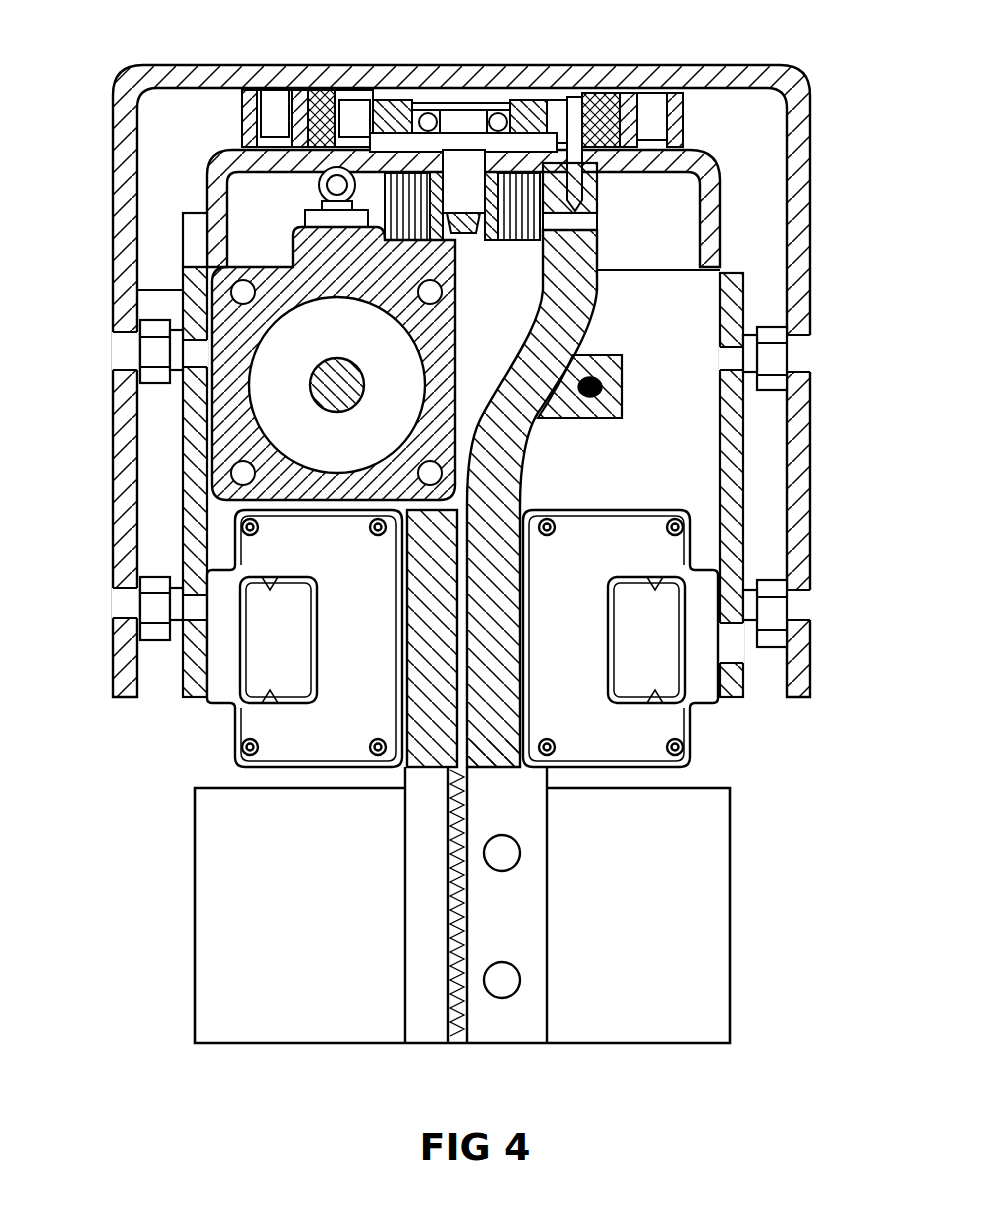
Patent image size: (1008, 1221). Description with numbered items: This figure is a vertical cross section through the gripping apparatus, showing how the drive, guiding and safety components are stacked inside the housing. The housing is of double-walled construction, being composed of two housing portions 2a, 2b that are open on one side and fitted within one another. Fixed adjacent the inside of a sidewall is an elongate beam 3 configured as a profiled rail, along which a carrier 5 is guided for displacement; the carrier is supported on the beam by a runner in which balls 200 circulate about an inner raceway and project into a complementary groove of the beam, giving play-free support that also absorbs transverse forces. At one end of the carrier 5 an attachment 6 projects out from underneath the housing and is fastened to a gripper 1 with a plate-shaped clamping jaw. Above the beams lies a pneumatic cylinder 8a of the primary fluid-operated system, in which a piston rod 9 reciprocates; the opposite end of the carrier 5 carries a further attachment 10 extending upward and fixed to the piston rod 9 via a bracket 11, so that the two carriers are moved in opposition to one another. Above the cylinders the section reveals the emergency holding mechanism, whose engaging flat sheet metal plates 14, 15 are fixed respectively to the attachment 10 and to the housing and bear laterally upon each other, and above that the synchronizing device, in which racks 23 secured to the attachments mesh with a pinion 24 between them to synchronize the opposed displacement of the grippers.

The gripper 1 is at (692, 835).
The housing portion 2a is at (805, 122).
The housing portion 2b is at (712, 207).
The elongate beam 3 is at (705, 652).
The carrier 5 is at (497, 647).
The attachment 6 is at (540, 920).
The pneumatic cylinder 8a is at (440, 447).
The piston rod 9 is at (310, 378).
The attachment 10 is at (563, 313).
The bracket 11 is at (603, 407).
The flat sheet metal plate 14 is at (398, 188).
The flat sheet metal plate 15 is at (395, 186).
The rack 23 is at (560, 100).
The pinion 24 is at (533, 101).
The ball 200 is at (270, 567).